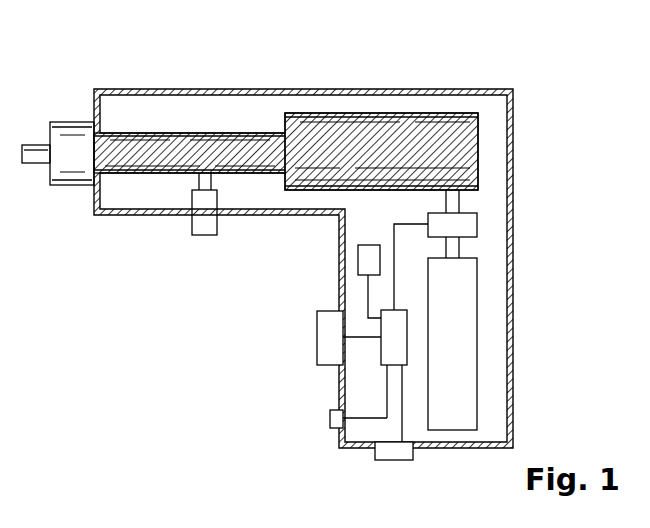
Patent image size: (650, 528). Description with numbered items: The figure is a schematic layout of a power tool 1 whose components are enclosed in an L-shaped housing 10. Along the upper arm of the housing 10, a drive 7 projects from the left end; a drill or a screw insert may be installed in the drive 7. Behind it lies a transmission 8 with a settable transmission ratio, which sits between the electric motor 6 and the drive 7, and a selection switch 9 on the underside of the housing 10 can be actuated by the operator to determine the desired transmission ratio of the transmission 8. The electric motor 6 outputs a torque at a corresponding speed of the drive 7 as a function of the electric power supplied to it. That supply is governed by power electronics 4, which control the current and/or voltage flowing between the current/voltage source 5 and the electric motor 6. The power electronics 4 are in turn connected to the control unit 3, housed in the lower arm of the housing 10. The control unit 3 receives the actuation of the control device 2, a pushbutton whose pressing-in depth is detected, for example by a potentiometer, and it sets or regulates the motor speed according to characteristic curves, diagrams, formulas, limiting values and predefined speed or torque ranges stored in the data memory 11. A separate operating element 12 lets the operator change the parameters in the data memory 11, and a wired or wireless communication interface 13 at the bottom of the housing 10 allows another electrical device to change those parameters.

The power tool 1 is at (545, 90).
The control device 2 is at (317, 334).
The control unit 3 is at (404, 310).
The power electronics 4 is at (477, 224).
The current/voltage source 5 is at (477, 340).
The electric motor 6 is at (380, 113).
The drive 7 is at (36, 145).
The transmission 8 is at (189, 133).
The selection switch 9 is at (205, 235).
The housing 10 is at (513, 270).
The data memory 11 is at (358, 258).
The separate operating element 12 is at (330, 416).
The communication interface 13 is at (394, 461).